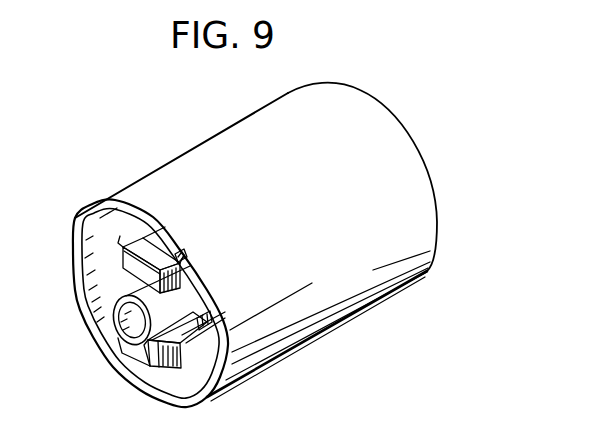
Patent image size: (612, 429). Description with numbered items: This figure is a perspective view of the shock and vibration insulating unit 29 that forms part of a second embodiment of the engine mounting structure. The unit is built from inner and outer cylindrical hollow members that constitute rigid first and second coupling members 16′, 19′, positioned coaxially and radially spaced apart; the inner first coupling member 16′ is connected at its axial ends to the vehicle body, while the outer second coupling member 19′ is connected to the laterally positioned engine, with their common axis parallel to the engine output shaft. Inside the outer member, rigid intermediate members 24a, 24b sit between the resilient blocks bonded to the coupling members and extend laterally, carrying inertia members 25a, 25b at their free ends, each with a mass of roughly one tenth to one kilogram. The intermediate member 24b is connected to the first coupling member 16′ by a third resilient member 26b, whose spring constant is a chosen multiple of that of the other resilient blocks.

The shock and vibration insulating unit 29 is at (412, 146).
The second coupling member 19′ is at (226, 129).
The first coupling member 16′ is at (113, 318).
The intermediate member 24a is at (158, 240).
The intermediate member 24b is at (190, 340).
The inertia member 25a is at (124, 258).
The inertia member 25b is at (137, 352).
The third resilient member 26b is at (213, 320).